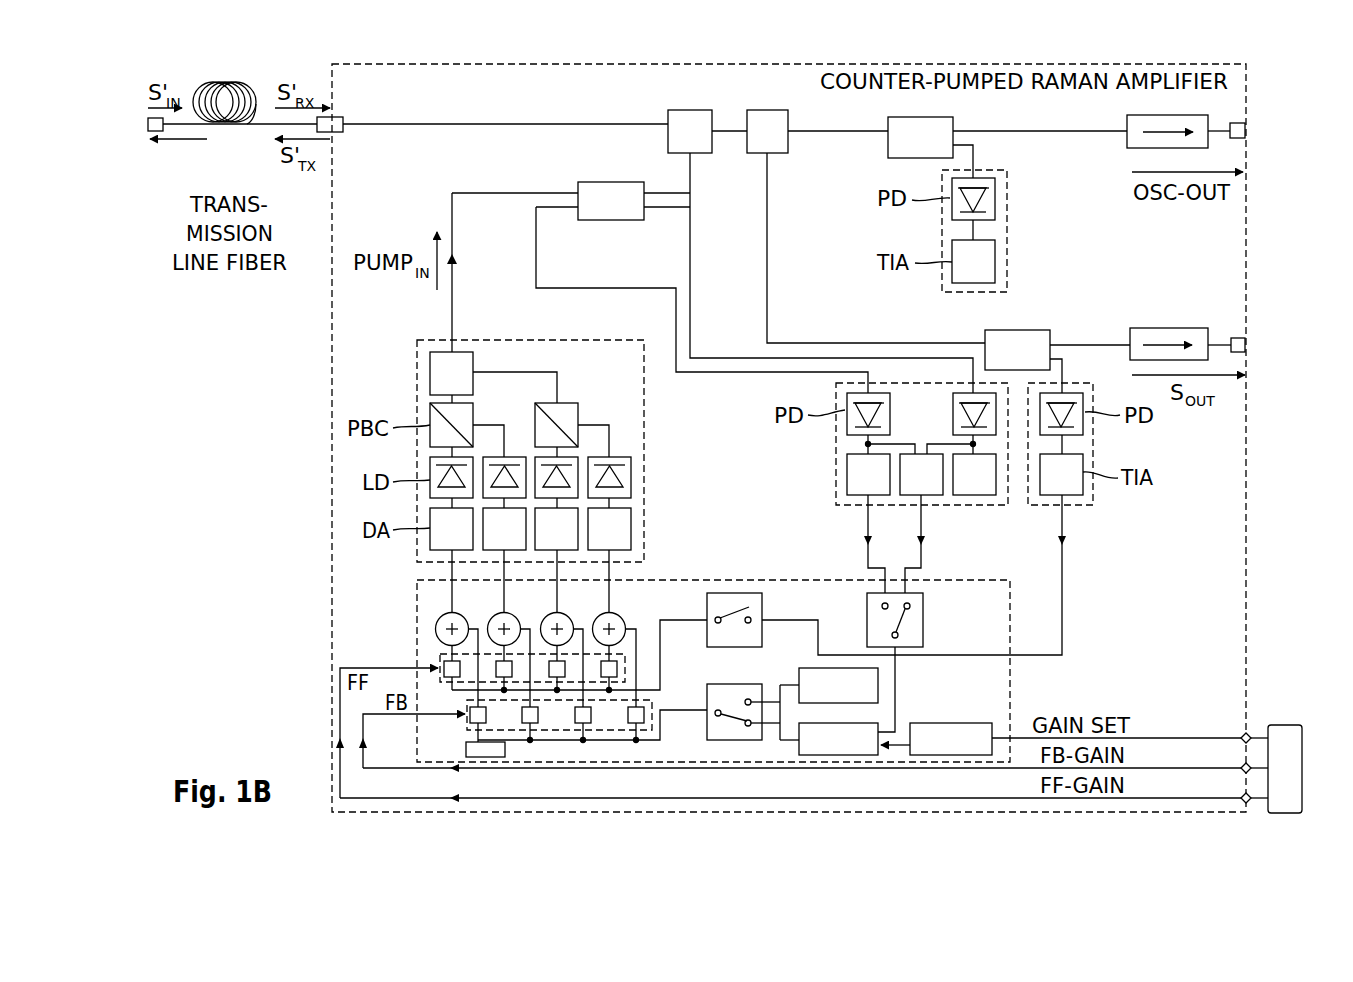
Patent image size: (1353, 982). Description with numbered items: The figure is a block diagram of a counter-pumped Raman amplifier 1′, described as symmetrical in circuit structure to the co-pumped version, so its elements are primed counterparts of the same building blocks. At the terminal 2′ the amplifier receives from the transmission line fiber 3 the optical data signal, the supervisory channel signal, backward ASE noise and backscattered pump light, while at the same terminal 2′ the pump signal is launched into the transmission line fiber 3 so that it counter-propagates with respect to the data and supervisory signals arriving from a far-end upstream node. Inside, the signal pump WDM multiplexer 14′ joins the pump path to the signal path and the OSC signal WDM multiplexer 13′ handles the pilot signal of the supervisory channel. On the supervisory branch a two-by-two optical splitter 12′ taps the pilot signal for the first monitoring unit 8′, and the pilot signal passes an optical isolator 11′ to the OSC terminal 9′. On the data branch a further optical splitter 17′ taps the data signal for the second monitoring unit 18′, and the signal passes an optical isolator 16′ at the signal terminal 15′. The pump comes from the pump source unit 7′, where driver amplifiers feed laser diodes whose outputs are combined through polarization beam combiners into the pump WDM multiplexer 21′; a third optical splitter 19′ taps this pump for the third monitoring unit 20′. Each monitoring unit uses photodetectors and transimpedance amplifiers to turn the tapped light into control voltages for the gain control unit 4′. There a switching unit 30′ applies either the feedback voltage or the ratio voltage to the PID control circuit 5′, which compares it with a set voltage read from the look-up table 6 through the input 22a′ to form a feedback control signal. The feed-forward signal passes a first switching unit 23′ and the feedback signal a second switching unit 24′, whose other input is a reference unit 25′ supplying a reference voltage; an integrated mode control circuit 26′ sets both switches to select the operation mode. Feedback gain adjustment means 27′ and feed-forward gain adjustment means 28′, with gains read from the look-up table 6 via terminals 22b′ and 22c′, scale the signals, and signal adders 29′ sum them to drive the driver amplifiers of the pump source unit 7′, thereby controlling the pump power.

The counter-pumped Raman amplifier 1′ is at (330, 333).
The terminal 2′ is at (333, 132).
The transmission line fiber 3 is at (255, 124).
The gain control unit 4′ is at (750, 580).
The PID control circuit 5′ is at (797, 727).
The look-up table 6 is at (1285, 725).
The pump source unit 7′ is at (644, 487).
The first monitoring unit 8′ is at (942, 228).
The OSC signal terminal 9′ is at (1246, 131).
The optical isolator 11′ is at (1127, 125).
The optical two-by-two splitter 12′ is at (888, 125).
The OSC signal WDM multiplexer 13′ is at (747, 117).
The signal pump WDM multiplexer 14′ is at (668, 117).
The signal terminal 15′ is at (1246, 345).
The optical isolator 16′ is at (1168, 328).
The second optical splitter 17′ is at (1030, 330).
The second signal monitoring unit 18′ is at (1093, 435).
The third optical splitter 19′ is at (609, 220).
The third monitoring unit 20′ is at (836, 472).
The pump WDM multiplexer 21′ is at (430, 372).
The input 22a′ is at (1241, 738).
The terminal 22b′ is at (1241, 768).
The terminal 22c′ is at (1241, 798).
The first switching unit 23′ is at (707, 598).
The second switching unit 24′ is at (708, 684).
The reference unit 25′ is at (878, 685).
The integrated mode control circuit 26′ is at (466, 750).
The feedback gain adjustment means 27′ is at (467, 722).
The feed-forward gain adjustment means 28′ is at (440, 660).
The signal adder 29′ is at (436, 625).
The switching unit 30′ is at (867, 620).